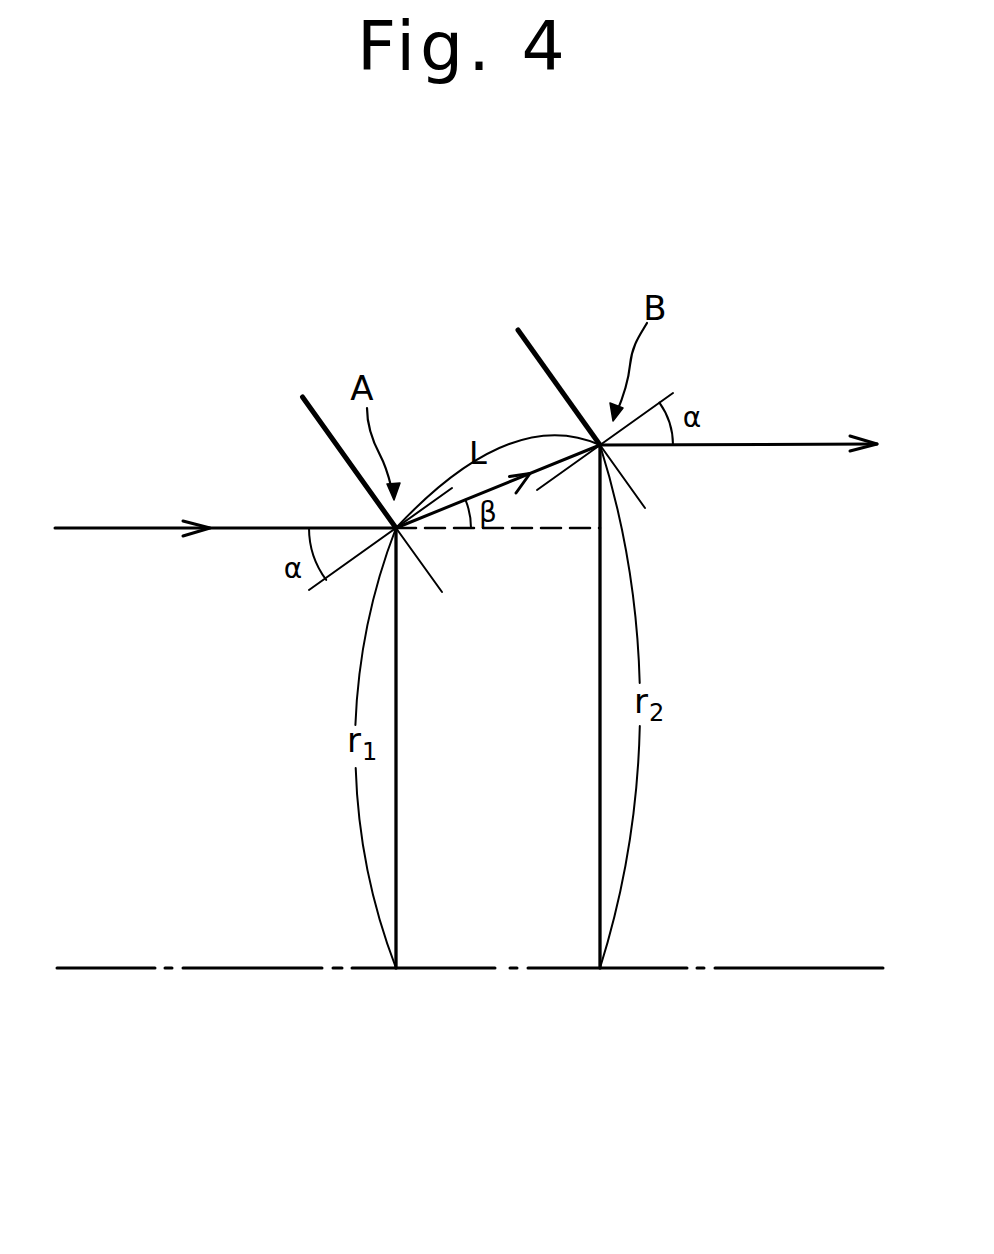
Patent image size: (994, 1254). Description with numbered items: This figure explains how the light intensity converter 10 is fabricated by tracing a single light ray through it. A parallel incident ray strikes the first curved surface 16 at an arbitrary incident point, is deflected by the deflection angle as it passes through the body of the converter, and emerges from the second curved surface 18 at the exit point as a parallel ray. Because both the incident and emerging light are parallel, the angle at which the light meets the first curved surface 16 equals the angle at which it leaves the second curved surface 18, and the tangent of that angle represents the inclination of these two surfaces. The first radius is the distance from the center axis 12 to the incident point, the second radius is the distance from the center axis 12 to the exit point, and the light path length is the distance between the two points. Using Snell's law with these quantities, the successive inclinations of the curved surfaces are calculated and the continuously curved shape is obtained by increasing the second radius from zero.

The light intensity converter 10 is at (465, 322).
The center axis 12 is at (733, 972).
The first curved surface 16 is at (317, 423).
The second curved surface 18 is at (535, 353).